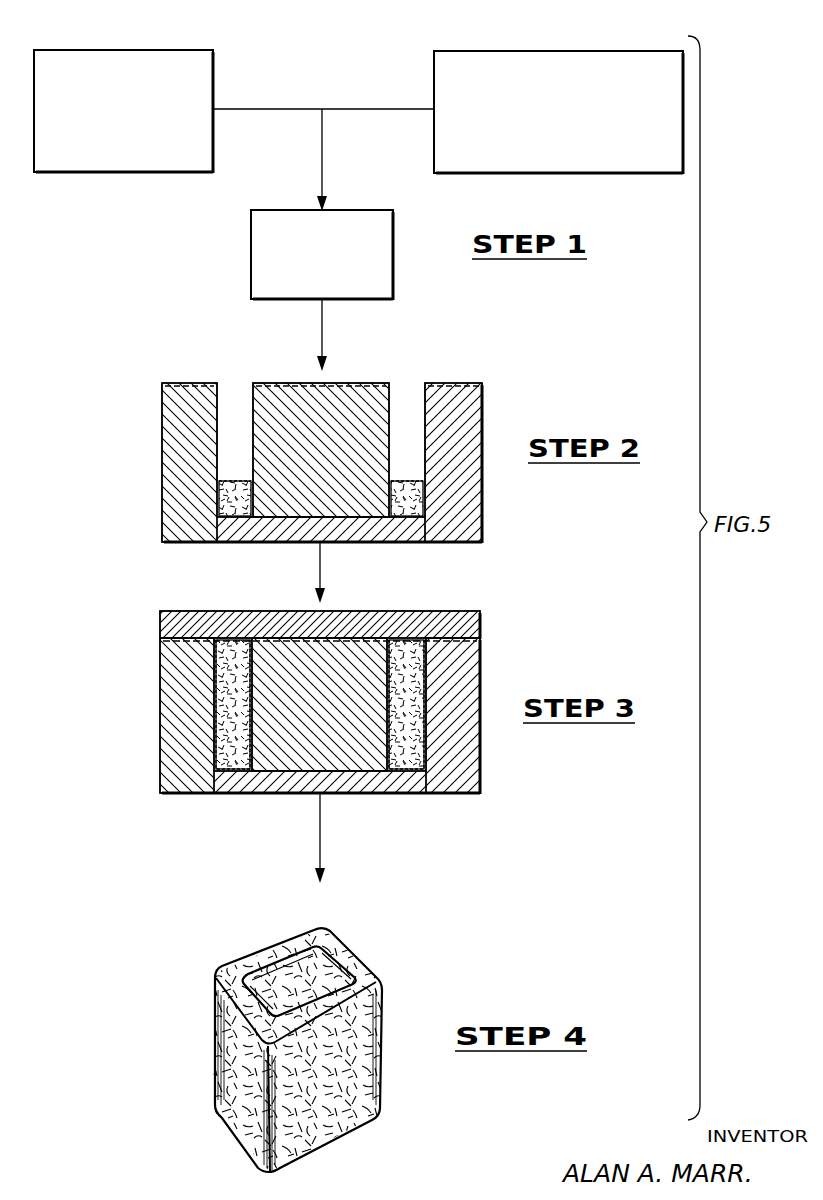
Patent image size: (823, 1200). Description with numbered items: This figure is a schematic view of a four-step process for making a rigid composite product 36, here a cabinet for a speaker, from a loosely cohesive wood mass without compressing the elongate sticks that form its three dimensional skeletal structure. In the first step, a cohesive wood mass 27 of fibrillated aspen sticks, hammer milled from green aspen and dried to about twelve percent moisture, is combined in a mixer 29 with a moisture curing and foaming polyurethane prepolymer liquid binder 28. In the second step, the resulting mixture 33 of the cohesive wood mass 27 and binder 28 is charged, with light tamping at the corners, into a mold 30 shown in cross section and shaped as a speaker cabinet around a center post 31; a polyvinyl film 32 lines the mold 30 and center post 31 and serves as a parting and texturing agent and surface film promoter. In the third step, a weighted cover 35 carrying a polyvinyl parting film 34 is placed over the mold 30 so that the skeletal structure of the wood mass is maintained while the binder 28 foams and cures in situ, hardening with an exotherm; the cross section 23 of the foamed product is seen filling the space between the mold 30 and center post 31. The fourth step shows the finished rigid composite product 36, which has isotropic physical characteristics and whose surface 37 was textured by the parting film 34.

The cohesive wood mass 27 is at (145, 63).
The moisture curing and foaming polyurethane prepolymer liquid binder 28 is at (612, 66).
The mixer 29 is at (337, 227).
The mold 30 is at (172, 471).
The center post 31 is at (284, 503).
The polyvinyl film 32 is at (478, 383).
The mixture 33 is at (228, 503).
The polyvinyl parting film 34 is at (473, 637).
The weighted cover 35 is at (452, 618).
The cross section 23 is at (405, 748).
The rigid composite product 36 is at (387, 957).
The surface 37 is at (356, 1031).